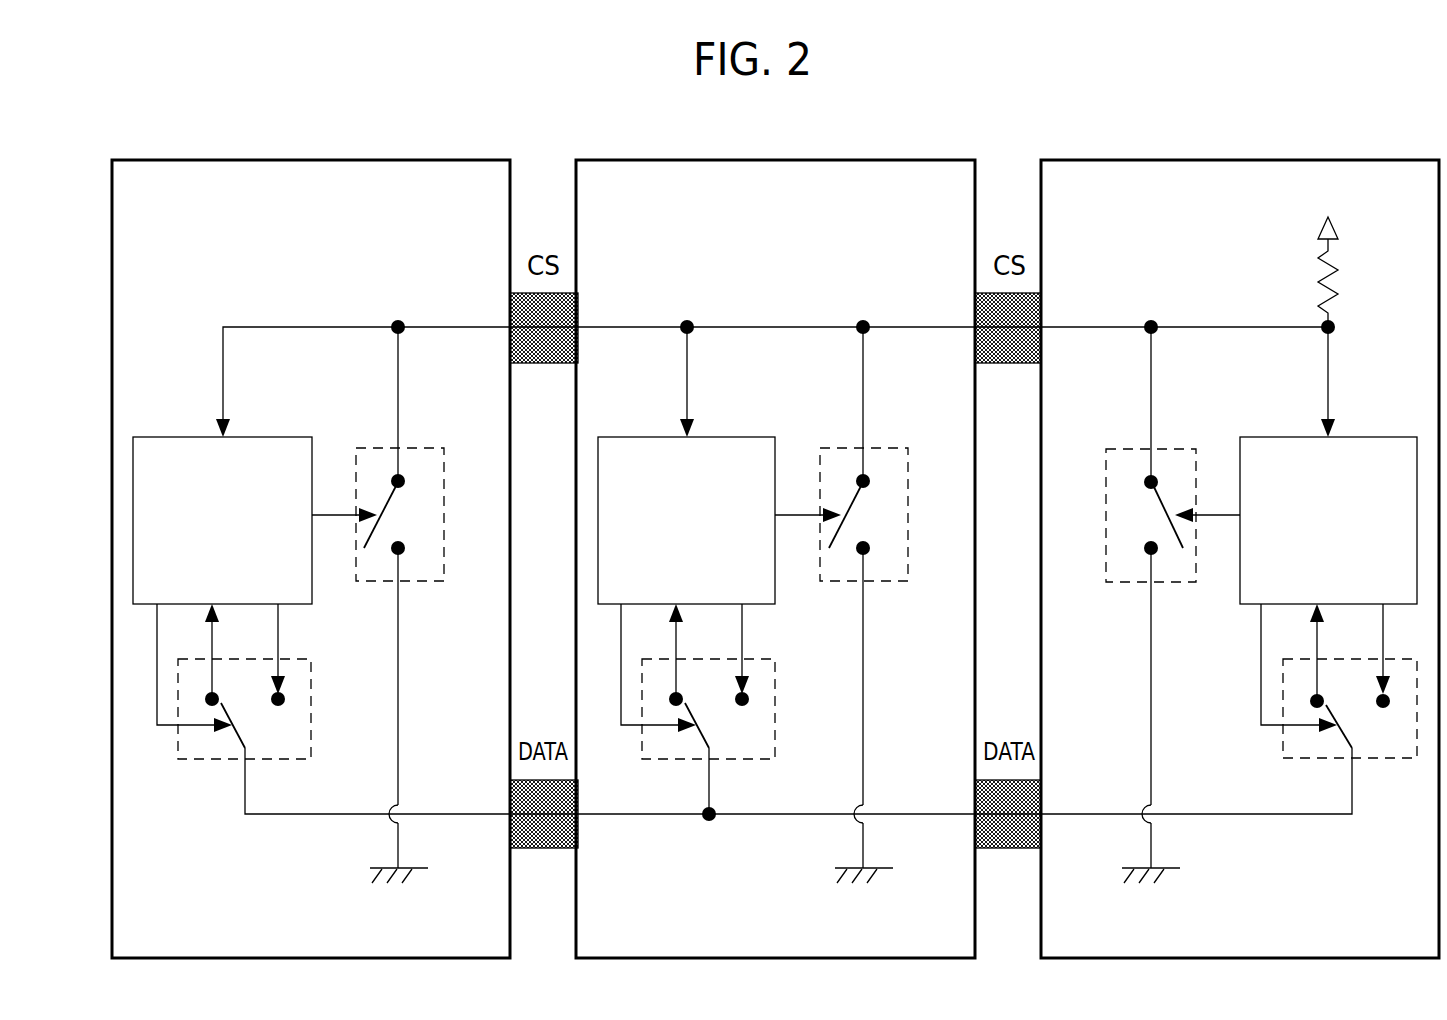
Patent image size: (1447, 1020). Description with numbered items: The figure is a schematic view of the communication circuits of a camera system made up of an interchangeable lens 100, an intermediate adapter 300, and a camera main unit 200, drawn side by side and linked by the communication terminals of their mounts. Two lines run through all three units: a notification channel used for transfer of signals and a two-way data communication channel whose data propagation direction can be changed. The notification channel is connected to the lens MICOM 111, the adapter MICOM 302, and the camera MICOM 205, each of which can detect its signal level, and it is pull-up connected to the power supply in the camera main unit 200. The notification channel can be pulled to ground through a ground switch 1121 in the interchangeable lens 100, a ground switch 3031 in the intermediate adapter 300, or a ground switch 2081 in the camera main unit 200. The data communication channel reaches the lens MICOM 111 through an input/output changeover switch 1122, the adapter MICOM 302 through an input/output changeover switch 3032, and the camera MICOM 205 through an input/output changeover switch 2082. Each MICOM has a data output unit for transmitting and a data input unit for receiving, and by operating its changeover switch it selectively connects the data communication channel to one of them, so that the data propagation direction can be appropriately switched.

The interchangeable lens 100 is at (369, 160).
The intermediate adapter 300 is at (855, 160).
The camera main unit 200 is at (1252, 160).
The lens MICOM 111 is at (192, 437).
The ground switch 1121 is at (370, 448).
The input/output changeover switch 1122 is at (286, 659).
The adapter MICOM 302 is at (644, 437).
The ground switch 3031 is at (836, 448).
The input/output changeover switch 3032 is at (750, 659).
The ground switch 2081 is at (1124, 448).
The camera MICOM 205 is at (1282, 437).
The input/output changeover switch 2082 is at (1304, 760).